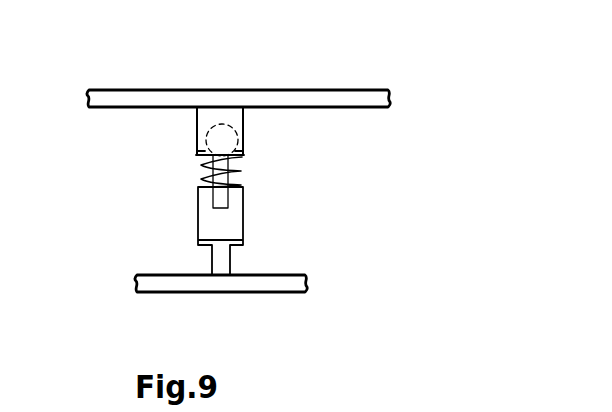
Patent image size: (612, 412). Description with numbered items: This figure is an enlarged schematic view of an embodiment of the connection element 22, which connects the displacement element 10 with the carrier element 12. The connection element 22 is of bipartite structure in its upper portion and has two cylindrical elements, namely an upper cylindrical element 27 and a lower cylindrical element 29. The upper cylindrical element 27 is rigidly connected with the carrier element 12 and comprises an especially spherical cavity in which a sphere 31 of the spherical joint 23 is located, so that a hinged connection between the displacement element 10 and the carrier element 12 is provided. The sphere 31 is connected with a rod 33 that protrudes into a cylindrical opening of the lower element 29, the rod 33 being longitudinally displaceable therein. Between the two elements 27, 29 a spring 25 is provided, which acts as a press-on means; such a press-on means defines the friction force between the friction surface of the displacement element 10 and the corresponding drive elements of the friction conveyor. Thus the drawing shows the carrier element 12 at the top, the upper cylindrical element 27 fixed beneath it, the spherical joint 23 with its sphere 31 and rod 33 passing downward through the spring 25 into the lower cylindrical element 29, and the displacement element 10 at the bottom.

The displacement element 10 is at (164, 287).
The carrier element 12 is at (237, 97).
The connection element 22 is at (290, 189).
The spherical joint 23 is at (262, 152).
The spring 25 is at (204, 164).
The upper cylindrical element 27 is at (213, 118).
The lower cylindrical element 29 is at (222, 223).
The sphere 31 is at (232, 139).
The rod 33 is at (202, 179).